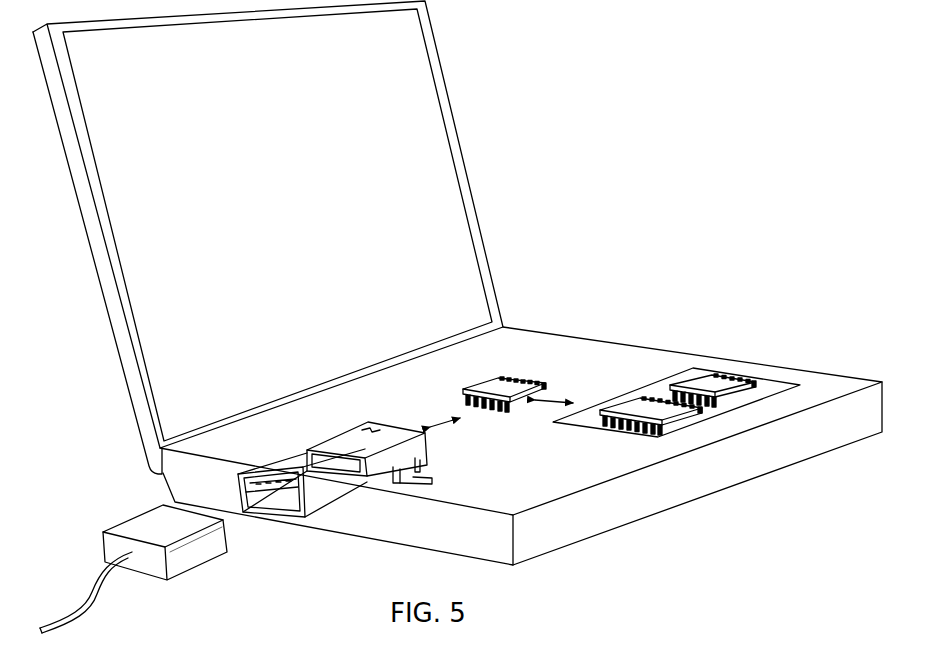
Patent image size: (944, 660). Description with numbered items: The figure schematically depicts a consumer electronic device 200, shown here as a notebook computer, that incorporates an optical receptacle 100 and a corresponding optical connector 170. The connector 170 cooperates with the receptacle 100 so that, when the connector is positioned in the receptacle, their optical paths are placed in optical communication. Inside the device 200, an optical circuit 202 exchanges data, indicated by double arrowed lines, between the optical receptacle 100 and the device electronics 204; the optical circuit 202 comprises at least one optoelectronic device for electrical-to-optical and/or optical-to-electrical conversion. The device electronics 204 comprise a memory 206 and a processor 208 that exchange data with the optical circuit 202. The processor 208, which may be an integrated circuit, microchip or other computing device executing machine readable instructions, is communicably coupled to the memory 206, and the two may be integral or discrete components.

The optical receptacle 100 is at (288, 432).
The corresponding optical connector 170 is at (96, 519).
The consumer electronic device 200 is at (457, 283).
The optical circuit 202 is at (502, 382).
The device electronics 204 is at (647, 378).
The memory 206 is at (698, 380).
The processor 208 is at (621, 409).